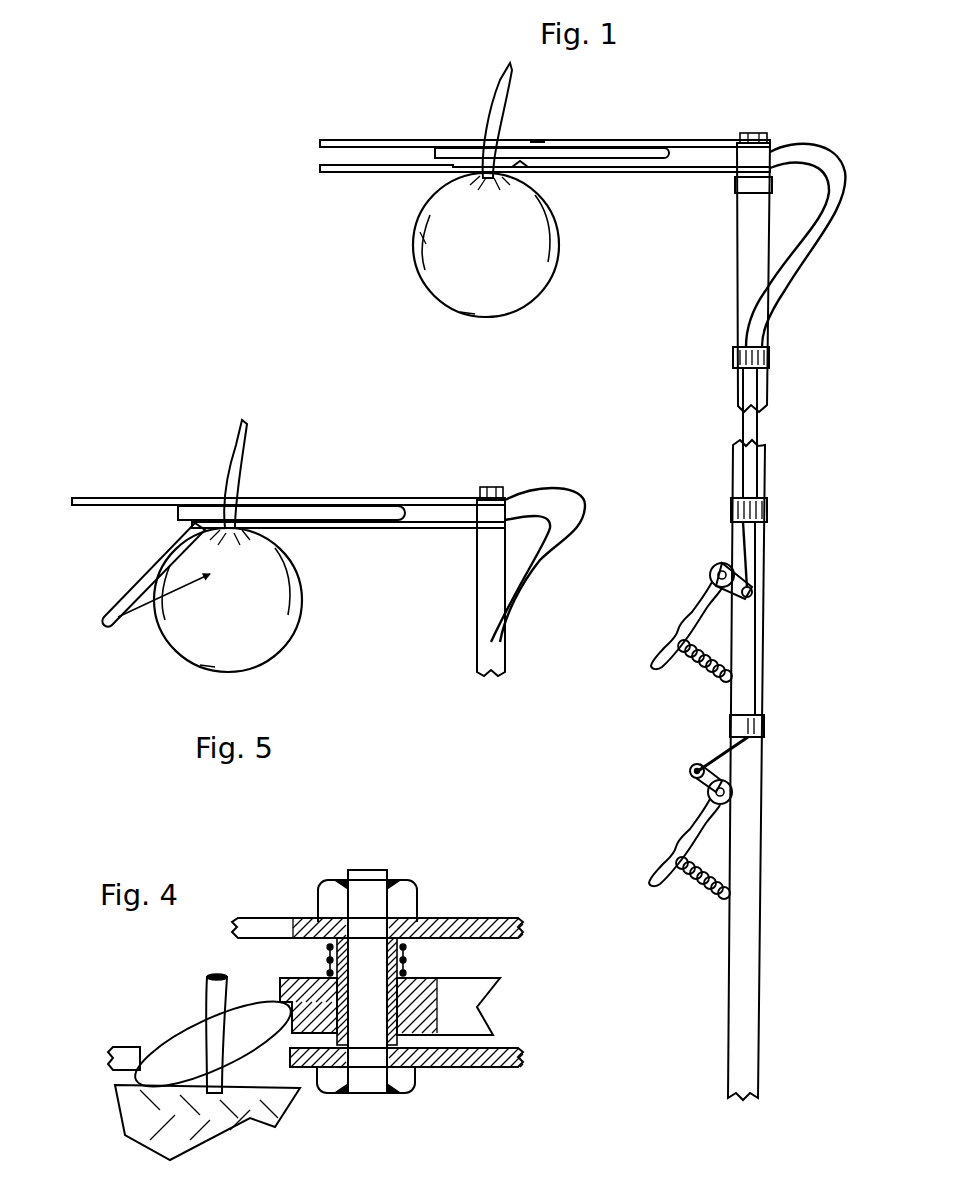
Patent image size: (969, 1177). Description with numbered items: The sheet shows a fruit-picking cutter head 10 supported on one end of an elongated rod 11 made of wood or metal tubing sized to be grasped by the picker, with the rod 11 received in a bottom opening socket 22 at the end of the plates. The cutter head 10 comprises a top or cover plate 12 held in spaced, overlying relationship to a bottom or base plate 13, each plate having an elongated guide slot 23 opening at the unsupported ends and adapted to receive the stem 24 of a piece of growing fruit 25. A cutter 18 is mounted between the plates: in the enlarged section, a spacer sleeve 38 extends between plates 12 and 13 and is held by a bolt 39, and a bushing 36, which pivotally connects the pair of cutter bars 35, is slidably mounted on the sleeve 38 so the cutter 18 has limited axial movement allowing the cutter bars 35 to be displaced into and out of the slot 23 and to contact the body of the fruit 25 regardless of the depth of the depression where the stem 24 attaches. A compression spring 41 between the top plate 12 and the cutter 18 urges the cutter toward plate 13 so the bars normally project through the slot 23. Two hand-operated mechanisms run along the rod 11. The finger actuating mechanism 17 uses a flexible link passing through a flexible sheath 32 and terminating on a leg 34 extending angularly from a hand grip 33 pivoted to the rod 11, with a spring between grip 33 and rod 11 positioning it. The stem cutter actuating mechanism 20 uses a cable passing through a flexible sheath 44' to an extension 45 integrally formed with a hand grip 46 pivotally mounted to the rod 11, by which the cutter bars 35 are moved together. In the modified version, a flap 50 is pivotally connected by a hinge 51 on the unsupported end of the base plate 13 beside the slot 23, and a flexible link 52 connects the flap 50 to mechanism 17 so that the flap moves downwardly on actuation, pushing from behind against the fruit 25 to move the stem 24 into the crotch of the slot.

In FIG. 1, the cutter head 10 is at (559, 134).
In FIG. 1, the elongated rod 11 is at (750, 808).
In FIG. 5, the elongated rod 11 is at (482, 660).
In FIG. 1, the top or cover plate 12 is at (345, 140).
In FIG. 4, the top or cover plate 12 is at (525, 927).
In FIG. 1, the bottom or base plate 13 is at (352, 172).
In FIG. 4, the bottom or base plate 13 is at (522, 1060).
In FIG. 1, the finger actuating mechanism 17 is at (674, 604).
In FIG. 1, the cutter 18 is at (636, 153).
In FIG. 5, the cutter 18 is at (351, 506).
In FIG. 4, the cutter 18 is at (504, 1004).
In FIG. 1, the stem cutter actuating mechanism 20 is at (667, 840).
In FIG. 1, the bottom opening socket 22 is at (740, 186).
In FIG. 4, the guide slot 23 is at (272, 925).
In FIG. 1, the stem 24 is at (505, 80).
In FIG. 5, the stem 24 is at (242, 457).
In FIG. 4, the stem 24 is at (210, 993).
In FIG. 1, the fruit 25 is at (540, 273).
In FIG. 5, the fruit 25 is at (303, 595).
In FIG. 4, the fruit 25 is at (130, 1108).
In FIG. 1, the flexible sheath 32 is at (835, 148).
In FIG. 5, the flexible sheath 32 is at (556, 487).
In FIG. 1, the hand grip 33 is at (655, 665).
In FIG. 1, the leg 34 is at (750, 588).
In FIG. 4, the cutter bars 35 is at (178, 1042).
In FIG. 4, the bushing 36 is at (415, 1012).
In FIG. 4, the spacer sleeve 38 is at (412, 924).
In FIG. 4, the bolt 39 is at (375, 1083).
In FIG. 4, the compression spring 41 is at (325, 956).
In FIG. 1, the flexible sheath 44' is at (821, 439).
In FIG. 5, the flexible sheath 44' is at (563, 579).
In FIG. 1, the extension 45 is at (700, 777).
In FIG. 1, the hand grip 46 is at (650, 886).
In FIG. 5, the flap 50 is at (120, 594).
In FIG. 5, the hinge 51 is at (195, 523).
In FIG. 5, the flexible link 52 is at (140, 607).